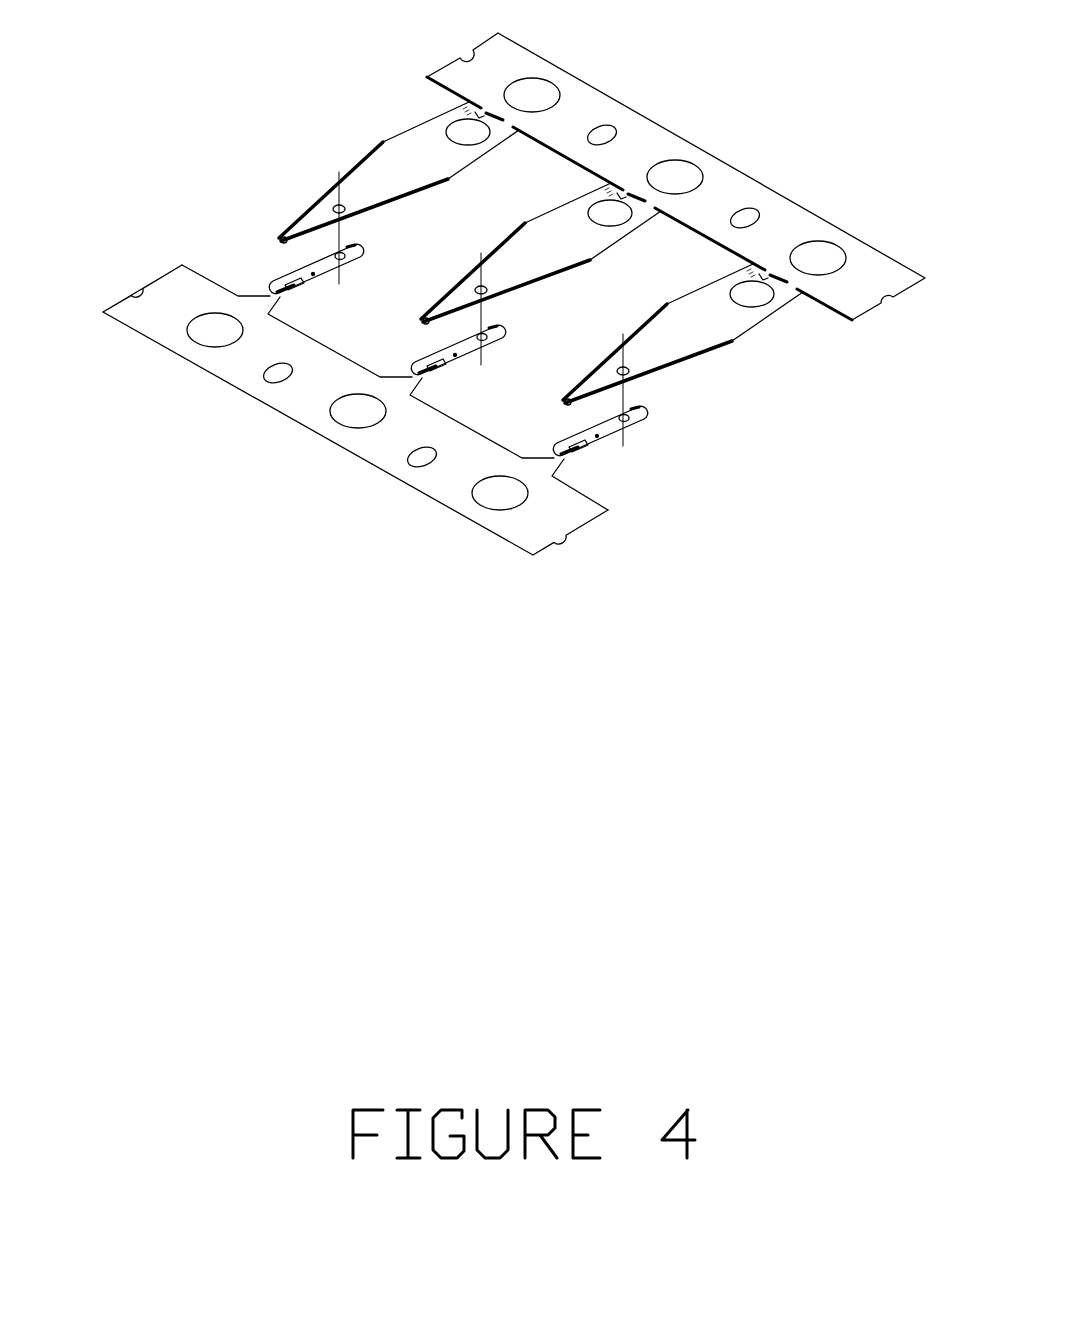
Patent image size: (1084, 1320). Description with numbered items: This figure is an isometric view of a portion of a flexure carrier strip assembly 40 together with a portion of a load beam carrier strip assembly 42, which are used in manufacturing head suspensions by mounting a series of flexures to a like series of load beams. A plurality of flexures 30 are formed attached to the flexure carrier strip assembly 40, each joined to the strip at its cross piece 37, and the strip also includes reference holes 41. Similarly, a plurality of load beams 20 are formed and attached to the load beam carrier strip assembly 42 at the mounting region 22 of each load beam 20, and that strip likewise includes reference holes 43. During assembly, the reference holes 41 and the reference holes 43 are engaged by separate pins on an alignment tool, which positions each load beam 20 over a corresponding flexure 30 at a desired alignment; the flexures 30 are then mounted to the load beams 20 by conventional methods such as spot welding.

The load beam 20 is at (708, 367).
The mounting region 22 is at (790, 289).
The flexure 30 is at (633, 430).
The cross piece 37 is at (567, 460).
The flexure carrier strip assembly 40 is at (523, 538).
The reference holes 41 is at (208, 333).
The load beam carrier strip assembly 42 is at (743, 187).
The reference holes 43 is at (541, 92).